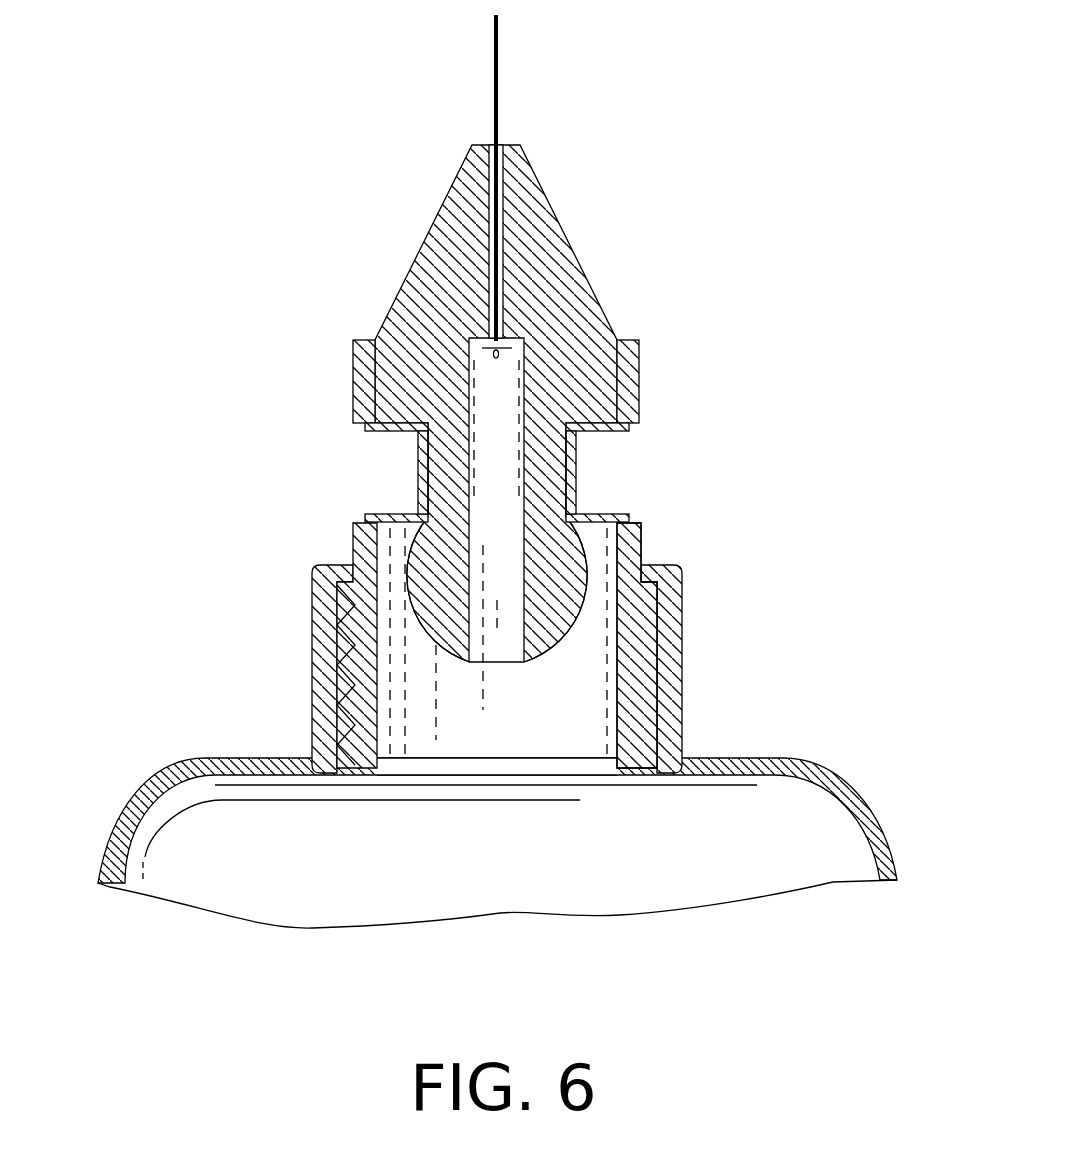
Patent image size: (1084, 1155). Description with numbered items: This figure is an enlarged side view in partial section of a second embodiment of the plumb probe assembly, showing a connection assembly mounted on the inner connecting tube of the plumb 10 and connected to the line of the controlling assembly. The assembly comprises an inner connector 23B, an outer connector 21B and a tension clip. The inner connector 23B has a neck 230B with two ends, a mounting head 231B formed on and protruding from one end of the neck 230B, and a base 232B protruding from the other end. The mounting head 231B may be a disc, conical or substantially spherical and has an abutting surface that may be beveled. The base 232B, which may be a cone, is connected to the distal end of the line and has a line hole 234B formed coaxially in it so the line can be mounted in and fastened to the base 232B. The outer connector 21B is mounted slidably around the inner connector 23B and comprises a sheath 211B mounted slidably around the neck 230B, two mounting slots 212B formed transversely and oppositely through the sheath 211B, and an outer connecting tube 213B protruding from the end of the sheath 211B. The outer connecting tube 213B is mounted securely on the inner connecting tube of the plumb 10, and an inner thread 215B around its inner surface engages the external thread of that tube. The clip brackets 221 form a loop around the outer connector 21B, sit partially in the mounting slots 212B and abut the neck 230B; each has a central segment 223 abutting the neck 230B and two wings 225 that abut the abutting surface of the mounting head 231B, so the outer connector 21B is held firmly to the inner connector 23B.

The plumb 10 is at (732, 727).
The outer connector 21B is at (569, 669).
The sheath 211B is at (628, 370).
The mounting slot 212B is at (628, 427).
The outer connecting tube 213B is at (682, 650).
The inner thread 215B is at (643, 710).
The clip bracket 221 is at (403, 470).
The central segment 223 is at (576, 473).
The wing 225 is at (413, 435).
The inner connector 23B is at (477, 434).
The neck 230B is at (569, 630).
The mounting head 231B is at (457, 632).
The base 232B is at (538, 235).
The line hole 234B is at (486, 190).